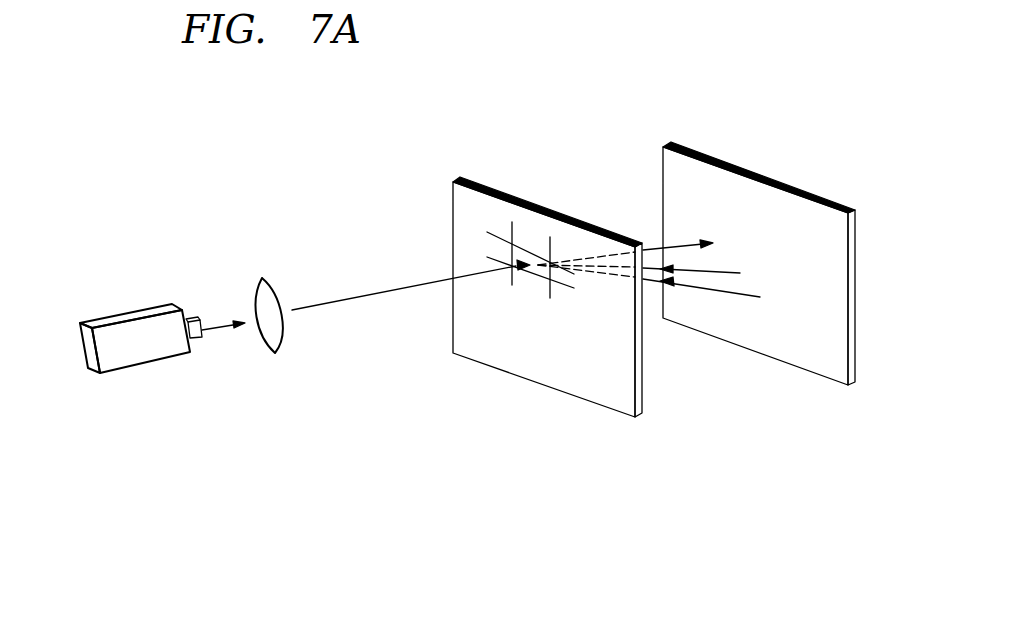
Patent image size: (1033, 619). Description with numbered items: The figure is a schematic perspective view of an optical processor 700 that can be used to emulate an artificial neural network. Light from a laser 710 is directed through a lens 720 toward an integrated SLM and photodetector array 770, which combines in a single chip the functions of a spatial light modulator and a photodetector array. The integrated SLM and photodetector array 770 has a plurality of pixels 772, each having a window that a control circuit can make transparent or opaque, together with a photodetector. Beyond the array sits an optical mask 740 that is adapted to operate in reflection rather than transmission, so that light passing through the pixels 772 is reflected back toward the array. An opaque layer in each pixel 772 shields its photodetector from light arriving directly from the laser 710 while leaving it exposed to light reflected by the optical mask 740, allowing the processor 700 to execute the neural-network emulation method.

The optical processor 700 is at (286, 91).
The laser 710 is at (85, 357).
The lens 720 is at (280, 342).
The optical mask 740 is at (812, 192).
The integrated SLM and photodetector array (ISLMPA) 770 is at (495, 187).
The pixel 772 is at (533, 270).